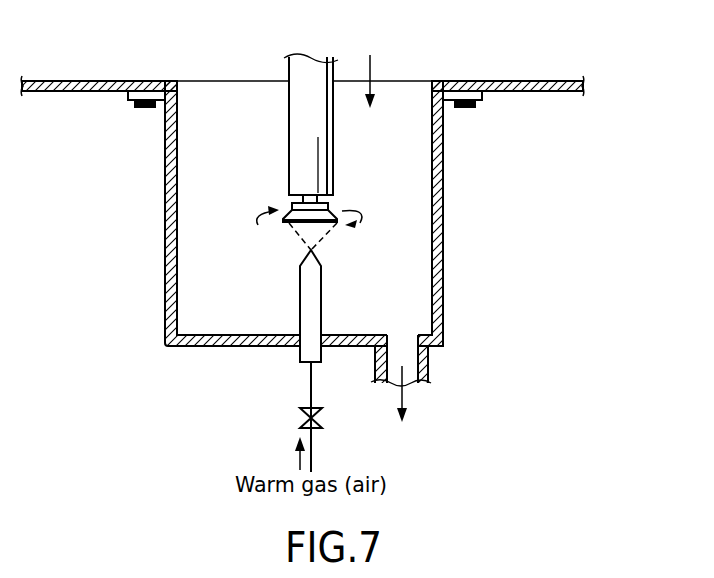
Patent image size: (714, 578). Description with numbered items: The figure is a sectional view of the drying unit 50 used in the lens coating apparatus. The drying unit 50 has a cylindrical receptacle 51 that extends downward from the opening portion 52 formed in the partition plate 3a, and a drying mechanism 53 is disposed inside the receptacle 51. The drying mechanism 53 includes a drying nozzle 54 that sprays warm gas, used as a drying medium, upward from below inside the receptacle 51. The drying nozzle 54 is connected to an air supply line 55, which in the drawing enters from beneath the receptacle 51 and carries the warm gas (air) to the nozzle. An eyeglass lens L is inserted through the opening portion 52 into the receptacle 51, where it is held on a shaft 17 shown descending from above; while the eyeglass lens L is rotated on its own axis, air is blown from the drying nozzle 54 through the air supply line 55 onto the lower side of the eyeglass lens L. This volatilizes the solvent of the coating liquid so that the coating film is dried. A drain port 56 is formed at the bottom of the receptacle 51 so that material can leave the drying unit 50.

The partition plate 3a is at (78, 82).
The rotary shaft tube 17 is at (296, 146).
The drying unit 50 is at (298, 211).
The cylindrical receptacle 51 is at (165, 173).
The opening portion 52 is at (221, 87).
The drying mechanism 53 is at (358, 260).
The drying nozzle 54 is at (306, 290).
The air supply line 55 is at (311, 384).
The drain port 56 is at (428, 359).
The eyeglass lens L is at (292, 206).